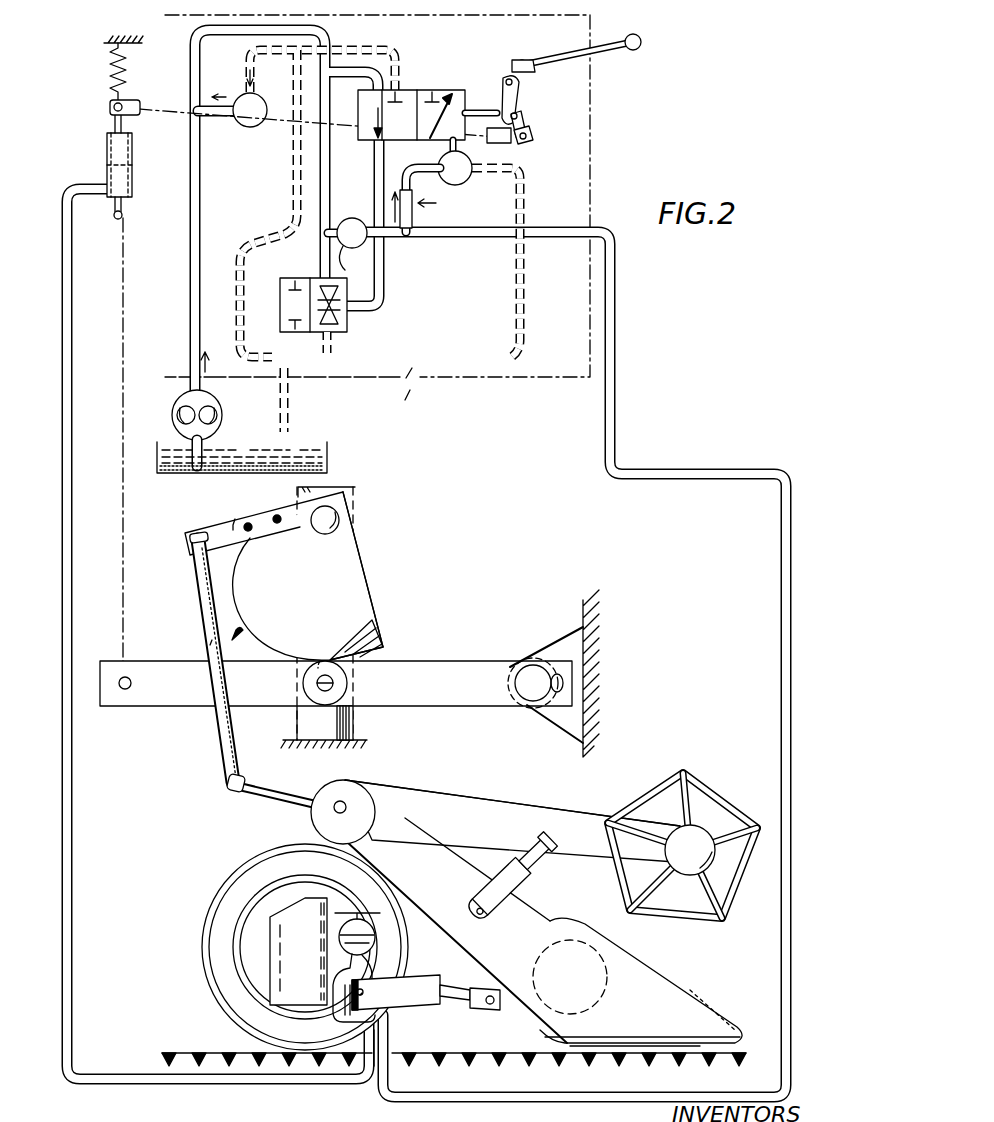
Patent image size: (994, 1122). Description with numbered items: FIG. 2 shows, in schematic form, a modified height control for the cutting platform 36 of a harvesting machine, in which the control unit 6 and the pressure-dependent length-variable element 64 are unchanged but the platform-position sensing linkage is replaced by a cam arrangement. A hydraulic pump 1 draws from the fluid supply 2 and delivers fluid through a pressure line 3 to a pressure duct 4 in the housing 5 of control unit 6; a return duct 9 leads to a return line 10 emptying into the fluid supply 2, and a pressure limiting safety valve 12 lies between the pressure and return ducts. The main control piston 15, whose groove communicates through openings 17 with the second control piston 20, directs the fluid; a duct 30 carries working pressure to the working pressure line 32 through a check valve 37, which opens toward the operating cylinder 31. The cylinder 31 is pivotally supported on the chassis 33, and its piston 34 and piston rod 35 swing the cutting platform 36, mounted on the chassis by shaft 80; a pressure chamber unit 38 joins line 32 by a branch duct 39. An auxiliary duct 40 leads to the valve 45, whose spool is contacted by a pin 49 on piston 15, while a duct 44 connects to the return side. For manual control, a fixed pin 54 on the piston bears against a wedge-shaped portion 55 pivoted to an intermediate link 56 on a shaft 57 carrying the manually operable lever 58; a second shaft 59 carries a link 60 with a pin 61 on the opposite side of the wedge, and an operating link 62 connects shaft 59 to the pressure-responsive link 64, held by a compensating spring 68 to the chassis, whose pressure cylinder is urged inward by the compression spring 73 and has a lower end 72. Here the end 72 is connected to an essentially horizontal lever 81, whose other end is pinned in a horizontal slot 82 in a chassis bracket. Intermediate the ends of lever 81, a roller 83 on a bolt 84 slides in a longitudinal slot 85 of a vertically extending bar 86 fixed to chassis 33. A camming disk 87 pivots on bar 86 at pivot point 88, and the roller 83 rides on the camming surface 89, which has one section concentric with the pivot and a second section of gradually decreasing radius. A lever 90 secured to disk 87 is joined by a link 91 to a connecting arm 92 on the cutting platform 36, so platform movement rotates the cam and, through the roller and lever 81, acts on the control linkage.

The hydraulic pump 1 is at (170, 428).
The fluid supply 2 is at (325, 448).
The pressure line 3 is at (216, 386).
The pressure duct 4 is at (193, 216).
The housing 5 is at (418, 397).
The control unit 6 is at (597, 163).
The return duct 9 is at (293, 174).
The return line 10 is at (290, 412).
The pressure limiting safety valve 12 is at (250, 128).
The control piston 15 is at (425, 80).
The openings 17 is at (384, 264).
The second control piston 20 is at (306, 268).
The duct 30 is at (338, 222).
The operating cylinder 31 is at (388, 1005).
The working pressure line 32 is at (622, 374).
The chassis 33 is at (108, 42).
The piston 34 is at (400, 978).
The piston rod 35 is at (458, 1005).
The cutting platform 36 is at (682, 998).
The check valve connection 37 is at (356, 264).
The pressure chamber unit 38 is at (372, 928).
The branch duct 39 is at (340, 1050).
The auxiliary duct 40 is at (415, 186).
The duct 44 is at (524, 288).
The valve 45 is at (476, 186).
The pin 49 is at (448, 146).
The fixed pin 54 is at (484, 94).
The wedge-shaped portion 55 is at (504, 86).
The intermediate link 56 is at (536, 66).
The shaft 57 is at (518, 60).
The manually operable lever 58 is at (616, 52).
The second shaft 59 is at (512, 140).
The link 60 is at (531, 130).
The pin 61 is at (522, 115).
The operating link 62 is at (165, 102).
The pressure-responsive link element 64 is at (98, 156).
The spring 68 is at (112, 82).
The end of pressure cylinder 72 is at (113, 208).
The compression spring 73 is at (82, 369).
The shaft 80 is at (332, 812).
The lever 81 is at (434, 666).
The horizontal slot 82 is at (565, 685).
The roller 83 is at (328, 648).
The bolt 84 is at (302, 683).
The longitudinal slot 85 is at (360, 724).
The vertically extending bar 86 is at (294, 730).
The camming disk 87 is at (356, 556).
The pivot point 88 is at (340, 520).
The camming surface 89 is at (212, 640).
The lever 90 is at (222, 526).
The link 91 is at (196, 582).
The connecting arm 92 is at (260, 790).